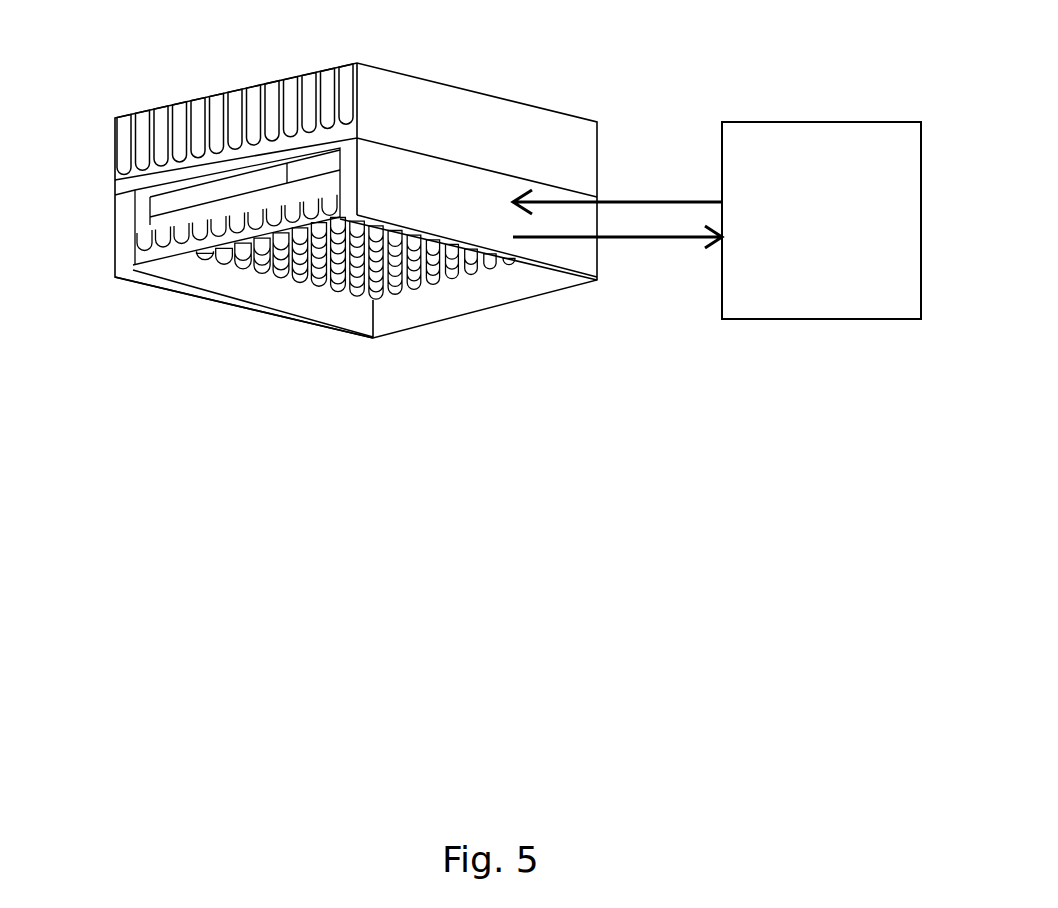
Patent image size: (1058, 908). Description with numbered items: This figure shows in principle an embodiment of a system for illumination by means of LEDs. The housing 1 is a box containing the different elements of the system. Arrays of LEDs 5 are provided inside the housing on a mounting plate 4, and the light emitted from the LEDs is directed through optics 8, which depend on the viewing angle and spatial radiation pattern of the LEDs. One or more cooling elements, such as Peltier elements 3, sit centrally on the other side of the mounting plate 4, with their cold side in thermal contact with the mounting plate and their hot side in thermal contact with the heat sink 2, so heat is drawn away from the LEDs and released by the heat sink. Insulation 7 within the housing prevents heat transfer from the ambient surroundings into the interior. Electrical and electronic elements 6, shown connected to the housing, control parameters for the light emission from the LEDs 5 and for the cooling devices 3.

The housing 1 is at (356, 200).
The heat sink 2 is at (259, 87).
The Peltier elements 3 is at (180, 202).
The mounting plate 4 is at (135, 222).
The LEDs 5 is at (248, 267).
The electrical and electronic elements 6 is at (717, 220).
The insulation 7 is at (127, 235).
The optics 8 is at (117, 273).